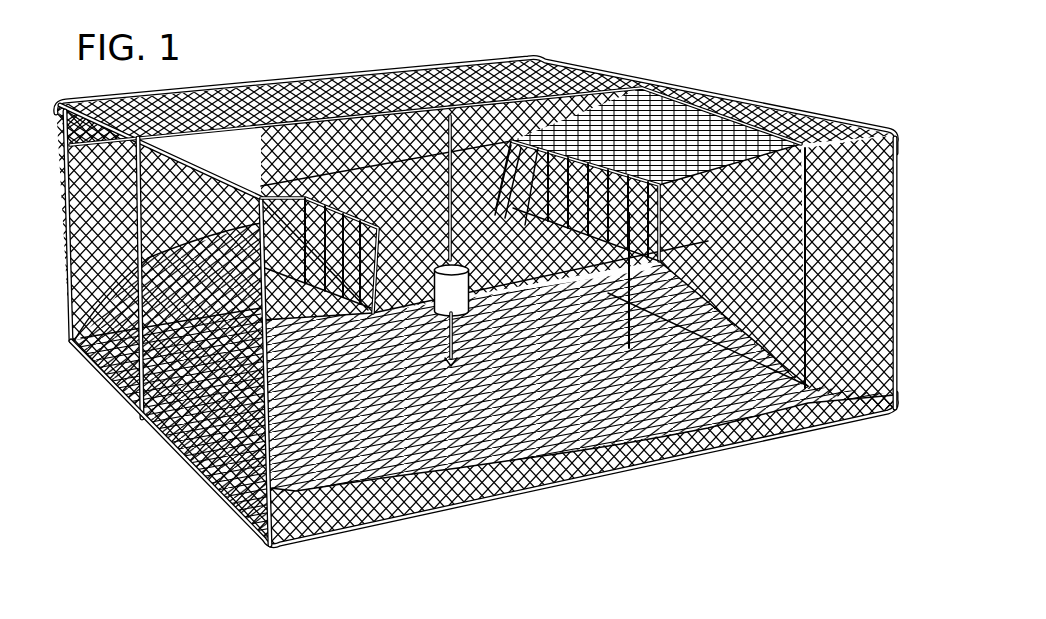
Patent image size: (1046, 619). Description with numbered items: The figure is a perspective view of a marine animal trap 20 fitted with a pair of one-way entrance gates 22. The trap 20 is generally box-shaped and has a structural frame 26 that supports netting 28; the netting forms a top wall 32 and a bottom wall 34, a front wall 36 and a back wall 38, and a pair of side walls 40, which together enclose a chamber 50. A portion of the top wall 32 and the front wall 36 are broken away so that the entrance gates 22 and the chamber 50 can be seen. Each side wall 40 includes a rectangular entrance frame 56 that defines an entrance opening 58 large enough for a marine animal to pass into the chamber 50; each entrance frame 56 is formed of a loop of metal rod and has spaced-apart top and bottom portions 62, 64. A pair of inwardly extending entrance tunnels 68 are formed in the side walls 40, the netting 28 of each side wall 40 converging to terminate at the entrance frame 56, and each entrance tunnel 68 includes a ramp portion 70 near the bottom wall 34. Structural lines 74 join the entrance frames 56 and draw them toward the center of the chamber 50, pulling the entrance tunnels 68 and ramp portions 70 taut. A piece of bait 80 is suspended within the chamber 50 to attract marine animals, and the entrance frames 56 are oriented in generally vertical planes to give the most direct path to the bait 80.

The marine animal trap 20 is at (731, 55).
The entrance gates 22 is at (598, 148).
The structural frame 26 is at (812, 108).
The netting 28 is at (683, 435).
The top wall 32 is at (735, 105).
The bottom wall 34 is at (517, 417).
The front wall 36 is at (365, 490).
The back wall 38 is at (470, 113).
The side walls 40 is at (784, 255).
The chamber 50 is at (741, 368).
The entrance frame 56 is at (640, 165).
The entrance opening 58 is at (470, 222).
The top portion 62 is at (518, 132).
The bottom portion 64 is at (621, 310).
The entrance tunnels 68 is at (96, 417).
The ramp portion 70 is at (200, 410).
The structural lines 74 is at (376, 205).
The bait 80 is at (462, 300).